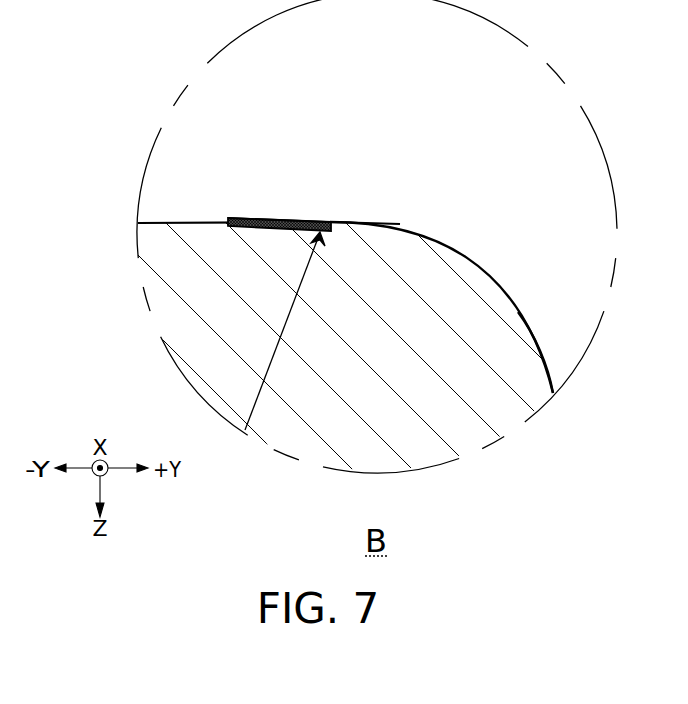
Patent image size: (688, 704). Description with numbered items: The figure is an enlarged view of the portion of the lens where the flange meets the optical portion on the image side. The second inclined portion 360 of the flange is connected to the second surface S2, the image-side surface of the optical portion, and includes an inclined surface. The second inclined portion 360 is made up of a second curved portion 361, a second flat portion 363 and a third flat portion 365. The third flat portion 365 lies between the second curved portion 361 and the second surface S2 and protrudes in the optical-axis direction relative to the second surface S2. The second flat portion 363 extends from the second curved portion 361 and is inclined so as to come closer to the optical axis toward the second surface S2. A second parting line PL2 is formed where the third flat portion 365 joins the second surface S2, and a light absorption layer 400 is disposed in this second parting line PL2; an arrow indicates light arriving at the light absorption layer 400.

The second inclined portion 360 is at (545, 122).
The second curved portion 361 is at (442, 238).
The second flat portion 363 is at (546, 364).
The third flat portion 365 is at (362, 223).
The light absorption layer 400 is at (248, 217).
The second parting line PL2 is at (318, 221).
The second surface S2 is at (167, 222).
The element light is at (255, 397).